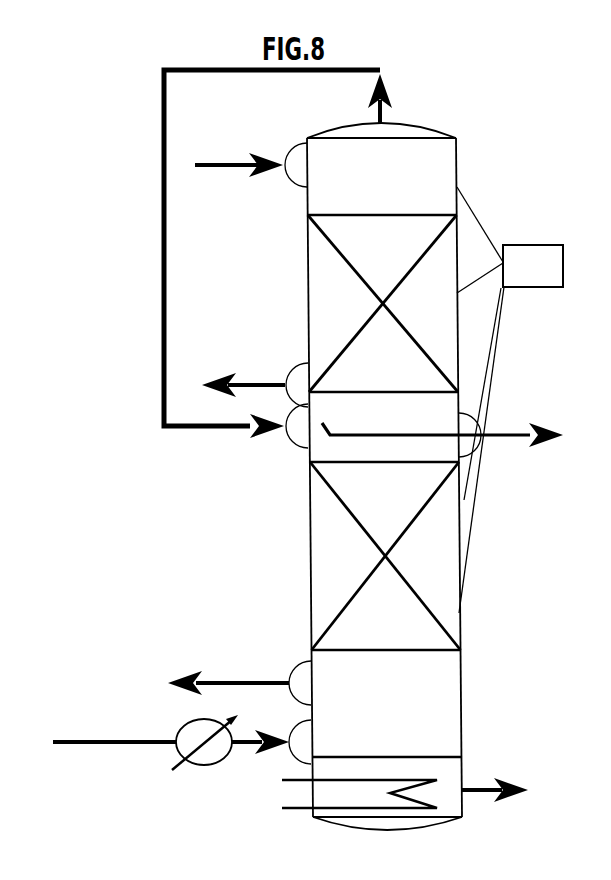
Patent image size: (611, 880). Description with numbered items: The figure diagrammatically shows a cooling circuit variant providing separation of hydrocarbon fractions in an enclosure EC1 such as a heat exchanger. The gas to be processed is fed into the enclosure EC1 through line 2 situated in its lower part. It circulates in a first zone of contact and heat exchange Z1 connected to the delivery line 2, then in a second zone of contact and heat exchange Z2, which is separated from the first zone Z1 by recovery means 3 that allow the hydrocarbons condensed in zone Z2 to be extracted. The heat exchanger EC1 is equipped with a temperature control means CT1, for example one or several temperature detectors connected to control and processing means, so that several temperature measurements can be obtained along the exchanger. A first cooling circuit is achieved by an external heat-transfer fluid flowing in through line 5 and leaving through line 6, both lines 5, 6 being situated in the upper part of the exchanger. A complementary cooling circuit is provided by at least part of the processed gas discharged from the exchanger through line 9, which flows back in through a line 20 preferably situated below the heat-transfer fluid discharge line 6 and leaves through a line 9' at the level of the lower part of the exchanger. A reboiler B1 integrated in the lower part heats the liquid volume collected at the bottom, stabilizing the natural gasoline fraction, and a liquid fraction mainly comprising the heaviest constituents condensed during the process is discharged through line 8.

The line 9 is at (389, 98).
The line 5 is at (251, 161).
The second zone of contact and heat exchange Z2 is at (307, 270).
The temperature control means CT1 is at (510, 400).
The line 6 is at (255, 379).
The line 20 is at (272, 259).
The recovery means 3 is at (420, 430).
The first zone of contact and heat exchange Z1 is at (311, 558).
The enclosure EC1 is at (516, 538).
The line 9' is at (239, 679).
The line 2 is at (182, 743).
The reboiler B1 is at (342, 804).
The line 8 is at (495, 796).